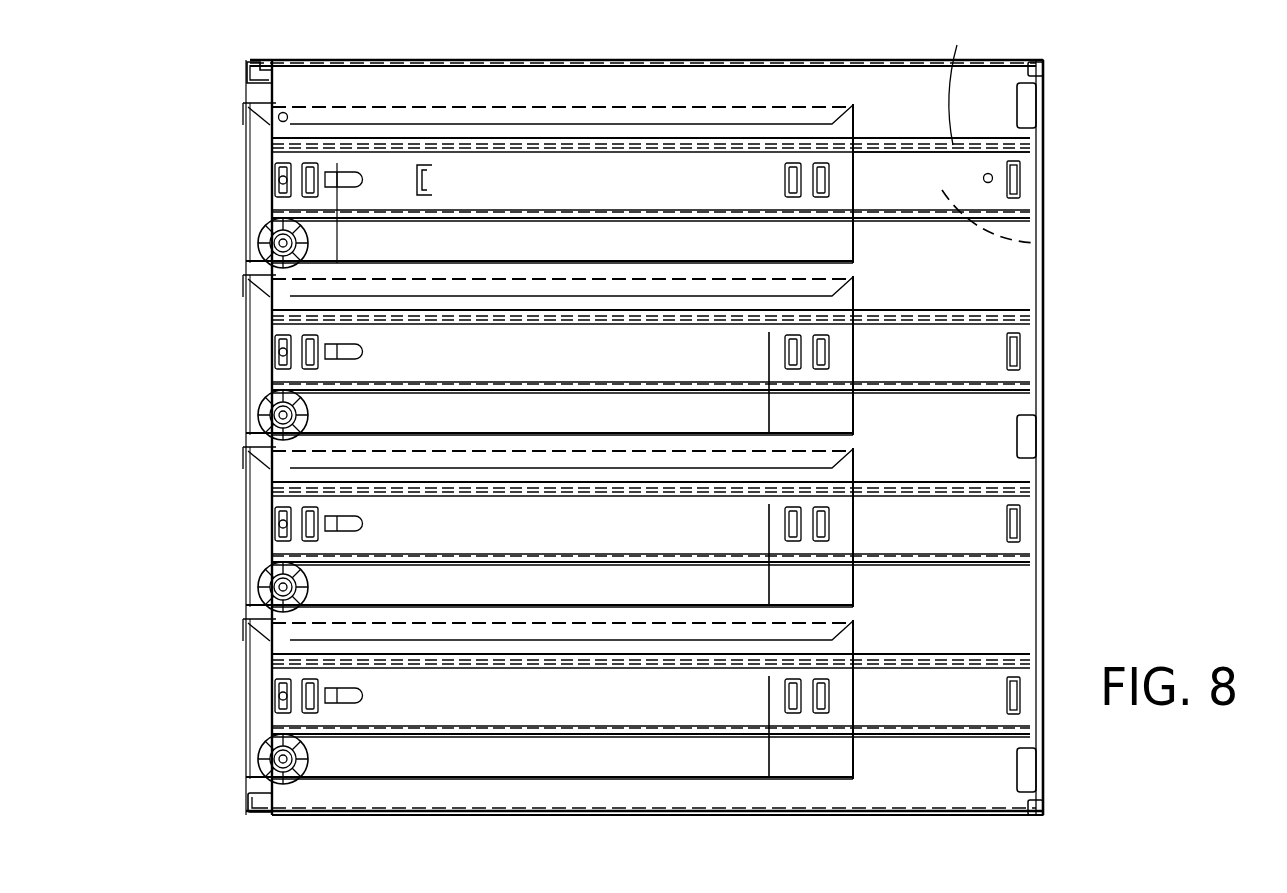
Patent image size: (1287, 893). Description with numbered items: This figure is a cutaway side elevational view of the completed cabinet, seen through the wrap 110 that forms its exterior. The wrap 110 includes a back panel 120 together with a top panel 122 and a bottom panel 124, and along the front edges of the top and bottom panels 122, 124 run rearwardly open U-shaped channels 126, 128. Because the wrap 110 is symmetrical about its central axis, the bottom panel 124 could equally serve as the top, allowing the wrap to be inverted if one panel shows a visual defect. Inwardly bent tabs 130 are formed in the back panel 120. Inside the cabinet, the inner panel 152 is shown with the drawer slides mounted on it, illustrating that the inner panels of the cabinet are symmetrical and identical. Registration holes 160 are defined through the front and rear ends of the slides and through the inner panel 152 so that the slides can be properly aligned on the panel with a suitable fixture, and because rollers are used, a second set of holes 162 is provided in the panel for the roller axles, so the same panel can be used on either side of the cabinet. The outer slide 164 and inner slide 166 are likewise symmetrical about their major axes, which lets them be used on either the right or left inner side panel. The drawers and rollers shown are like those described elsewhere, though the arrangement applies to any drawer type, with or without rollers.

The wrap 110 is at (1043, 387).
The back panel 120 is at (1043, 590).
The top panel 122 is at (628, 60).
The bottom panel 124 is at (510, 818).
The U-shaped channel 126 is at (247, 72).
The U-shaped channel 128 is at (250, 805).
The inwardly bent tabs 130 is at (1027, 107).
The inner panel 152 is at (905, 98).
The registration holes 160 is at (996, 178).
The second set of holes 162 is at (283, 113).
The outer slide 164 is at (980, 82).
The inner slide 166 is at (1043, 242).